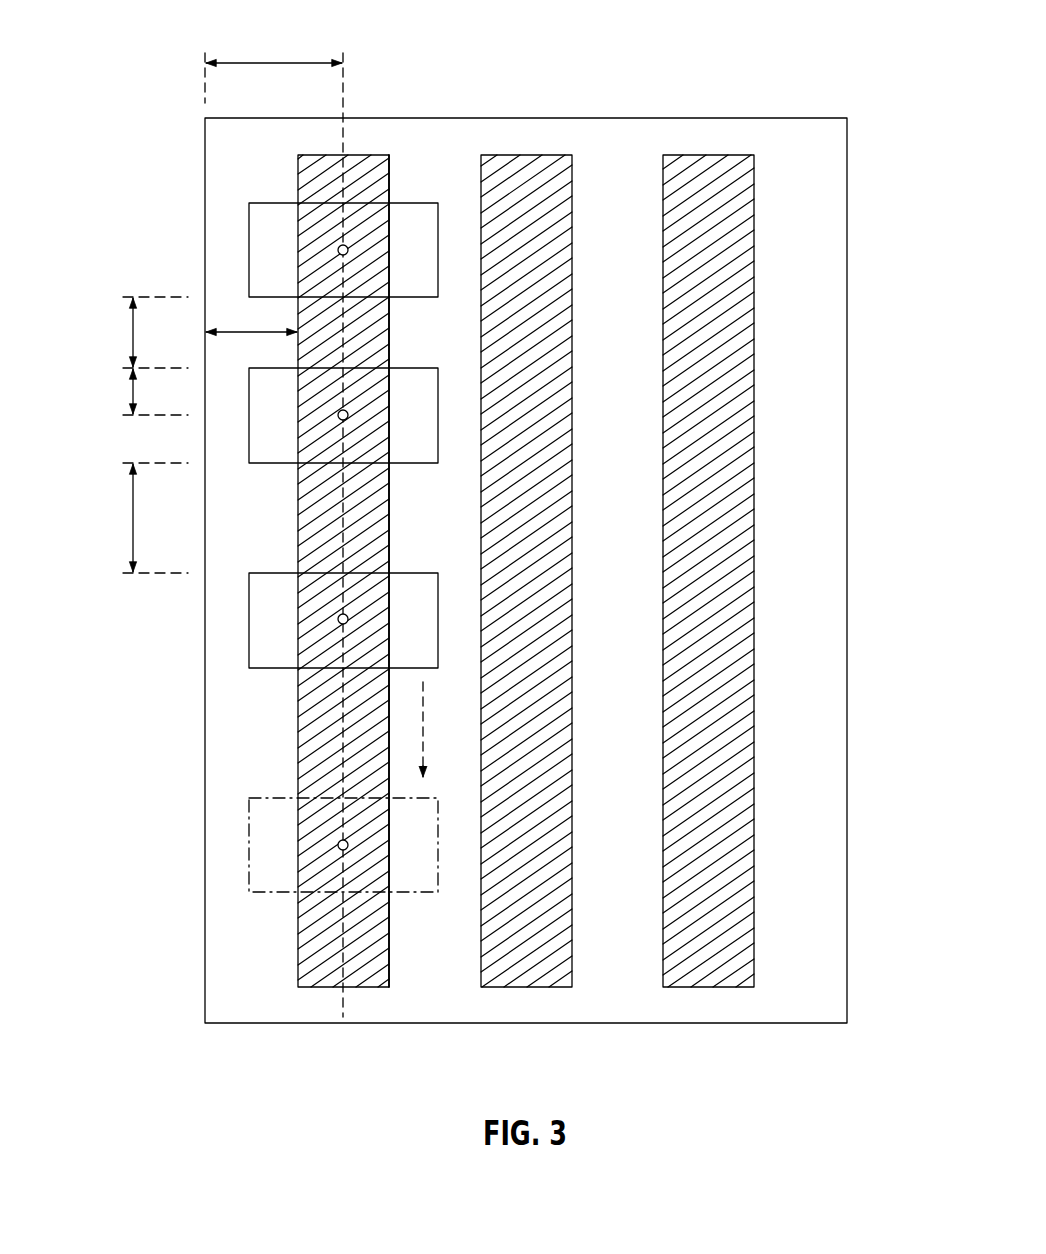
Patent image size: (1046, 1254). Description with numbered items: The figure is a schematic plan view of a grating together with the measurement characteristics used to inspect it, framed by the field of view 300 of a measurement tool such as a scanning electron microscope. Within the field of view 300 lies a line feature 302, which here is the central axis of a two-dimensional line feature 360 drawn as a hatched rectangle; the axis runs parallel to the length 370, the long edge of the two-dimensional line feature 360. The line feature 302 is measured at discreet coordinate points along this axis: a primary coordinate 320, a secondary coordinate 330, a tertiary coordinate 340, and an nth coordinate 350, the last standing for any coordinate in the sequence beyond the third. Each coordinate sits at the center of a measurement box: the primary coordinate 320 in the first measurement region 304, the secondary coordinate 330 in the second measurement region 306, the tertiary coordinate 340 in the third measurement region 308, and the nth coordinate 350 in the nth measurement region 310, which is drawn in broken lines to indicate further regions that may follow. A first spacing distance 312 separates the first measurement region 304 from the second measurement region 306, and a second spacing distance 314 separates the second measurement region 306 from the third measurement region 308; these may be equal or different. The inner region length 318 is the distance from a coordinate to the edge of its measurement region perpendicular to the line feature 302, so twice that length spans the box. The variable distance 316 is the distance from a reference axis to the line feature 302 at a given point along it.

The field of view 300 is at (791, 62).
The line feature 302 is at (332, 966).
The first measurement region 304 is at (249, 253).
The second measurement region 306 is at (249, 415).
The third measurement region 308 is at (249, 643).
The nth measurement region 310 is at (249, 862).
The first spacing distance 312 is at (133, 330).
The second spacing distance 314 is at (133, 520).
The variable distance 316 is at (273, 63).
The inner region length 318 is at (133, 392).
The primary coordinate 320 is at (341, 245).
The secondary coordinate 330 is at (341, 410).
The tertiary coordinate 340 is at (341, 614).
The nth coordinate 350 is at (341, 840).
The 2D line feature 360 is at (378, 922).
The length 370 is at (390, 509).